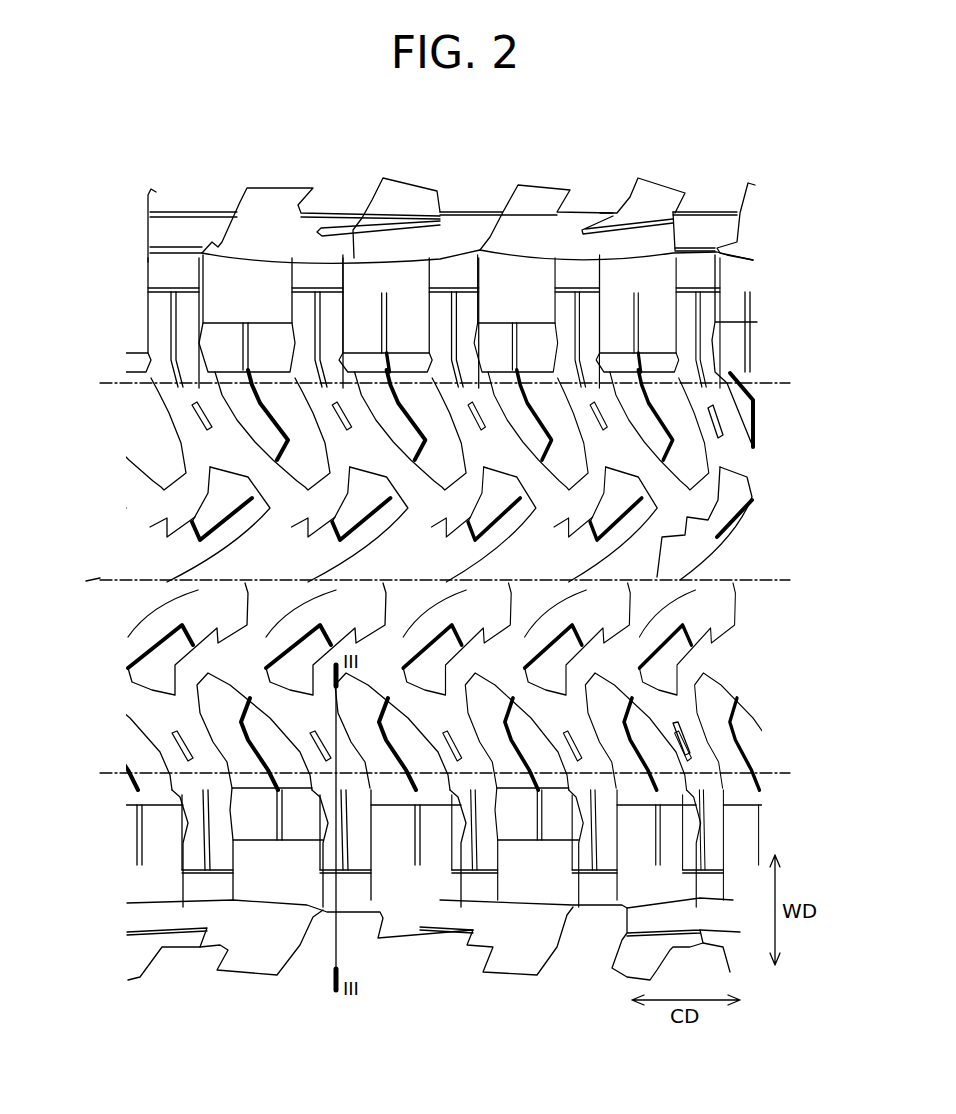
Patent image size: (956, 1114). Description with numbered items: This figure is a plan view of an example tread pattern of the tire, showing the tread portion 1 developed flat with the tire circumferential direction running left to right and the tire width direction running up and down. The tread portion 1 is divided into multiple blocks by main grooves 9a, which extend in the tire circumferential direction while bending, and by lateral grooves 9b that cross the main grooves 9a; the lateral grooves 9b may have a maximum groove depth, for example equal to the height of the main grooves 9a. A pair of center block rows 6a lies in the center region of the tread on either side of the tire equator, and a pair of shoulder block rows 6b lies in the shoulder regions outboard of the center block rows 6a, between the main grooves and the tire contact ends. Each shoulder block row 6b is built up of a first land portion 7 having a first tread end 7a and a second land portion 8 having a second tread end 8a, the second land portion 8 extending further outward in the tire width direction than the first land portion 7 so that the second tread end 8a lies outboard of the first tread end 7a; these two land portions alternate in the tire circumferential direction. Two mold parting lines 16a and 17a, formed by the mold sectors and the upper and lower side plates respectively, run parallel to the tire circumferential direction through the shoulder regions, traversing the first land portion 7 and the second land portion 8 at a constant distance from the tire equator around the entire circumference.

The tread portion 1 is at (814, 378).
The center block rows 6a is at (108, 549).
The shoulder block rows 6b is at (110, 455).
The first land portion 7 is at (305, 480).
The first tread end 7a is at (266, 372).
The second land portion 8 is at (447, 480).
The second tread end 8a is at (368, 355).
The main grooves 9a is at (678, 493).
The lateral grooves 9b is at (620, 418).
The mold parting line 16a is at (108, 383).
The mold parting line 17a is at (103, 773).